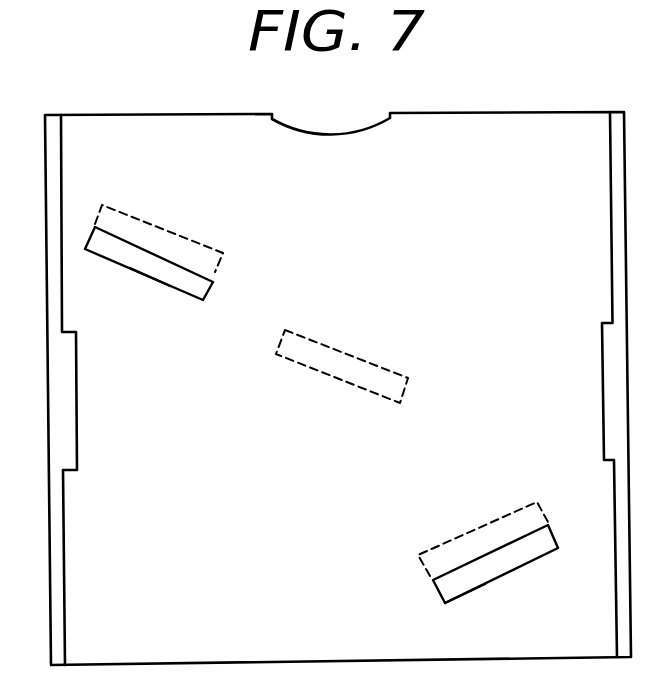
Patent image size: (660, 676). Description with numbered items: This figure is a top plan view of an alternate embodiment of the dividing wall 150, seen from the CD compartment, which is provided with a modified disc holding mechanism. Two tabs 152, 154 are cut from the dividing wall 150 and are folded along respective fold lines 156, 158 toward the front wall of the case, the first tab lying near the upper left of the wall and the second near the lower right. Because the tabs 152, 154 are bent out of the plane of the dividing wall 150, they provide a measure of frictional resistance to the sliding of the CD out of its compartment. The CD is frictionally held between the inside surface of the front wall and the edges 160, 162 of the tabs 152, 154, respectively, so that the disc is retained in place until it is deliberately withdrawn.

The dividing wall 150 is at (470, 279).
The tab 152 is at (193, 284).
The tab 154 is at (530, 548).
The fold line 156 is at (162, 257).
The fold line 158 is at (490, 553).
The edge 160 is at (150, 278).
The edge 162 is at (465, 597).